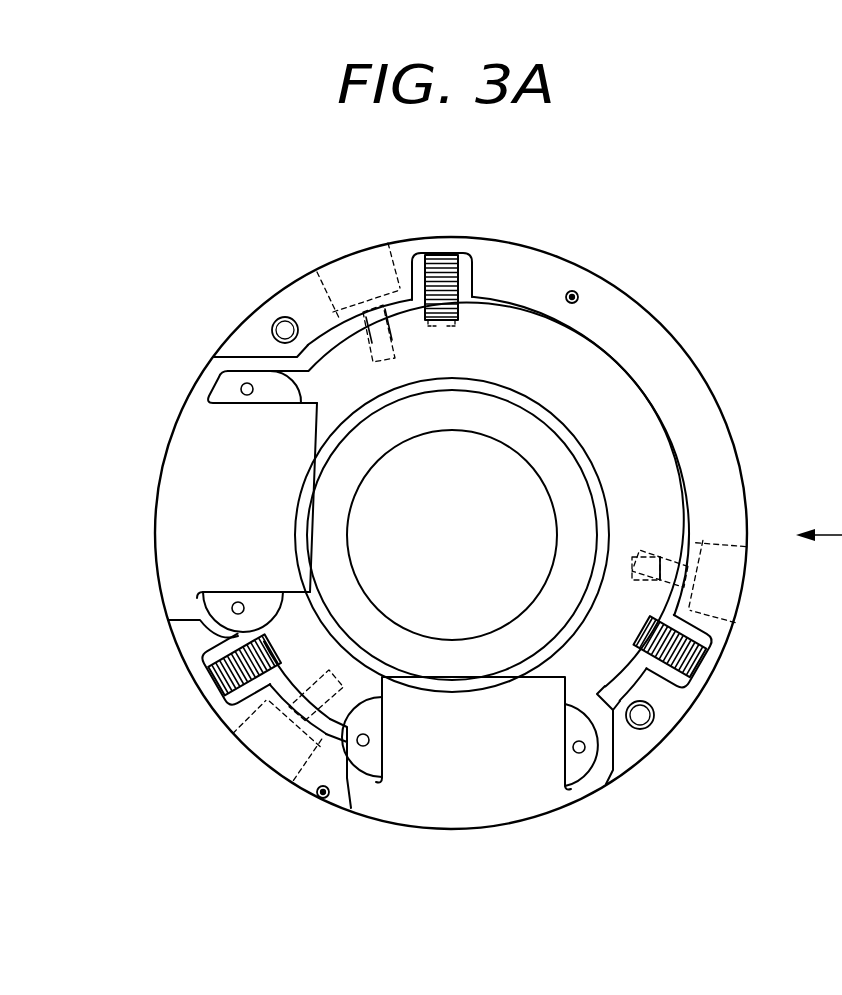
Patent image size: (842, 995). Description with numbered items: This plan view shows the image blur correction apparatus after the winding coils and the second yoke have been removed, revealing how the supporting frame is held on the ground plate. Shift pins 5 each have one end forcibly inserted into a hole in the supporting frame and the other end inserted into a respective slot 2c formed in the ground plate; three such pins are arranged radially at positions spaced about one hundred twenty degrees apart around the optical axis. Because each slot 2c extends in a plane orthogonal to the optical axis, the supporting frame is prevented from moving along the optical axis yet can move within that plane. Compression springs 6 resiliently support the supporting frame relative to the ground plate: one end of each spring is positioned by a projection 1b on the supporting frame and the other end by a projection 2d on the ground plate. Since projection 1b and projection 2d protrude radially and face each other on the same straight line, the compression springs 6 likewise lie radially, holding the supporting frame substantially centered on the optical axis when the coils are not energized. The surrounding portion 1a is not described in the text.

The base plate 1a is at (648, 556).
The projection 1b is at (437, 327).
The slot 2c is at (700, 620).
The projection 2d is at (440, 255).
The shift pin 5 is at (665, 568).
The compression spring 6 is at (453, 283).